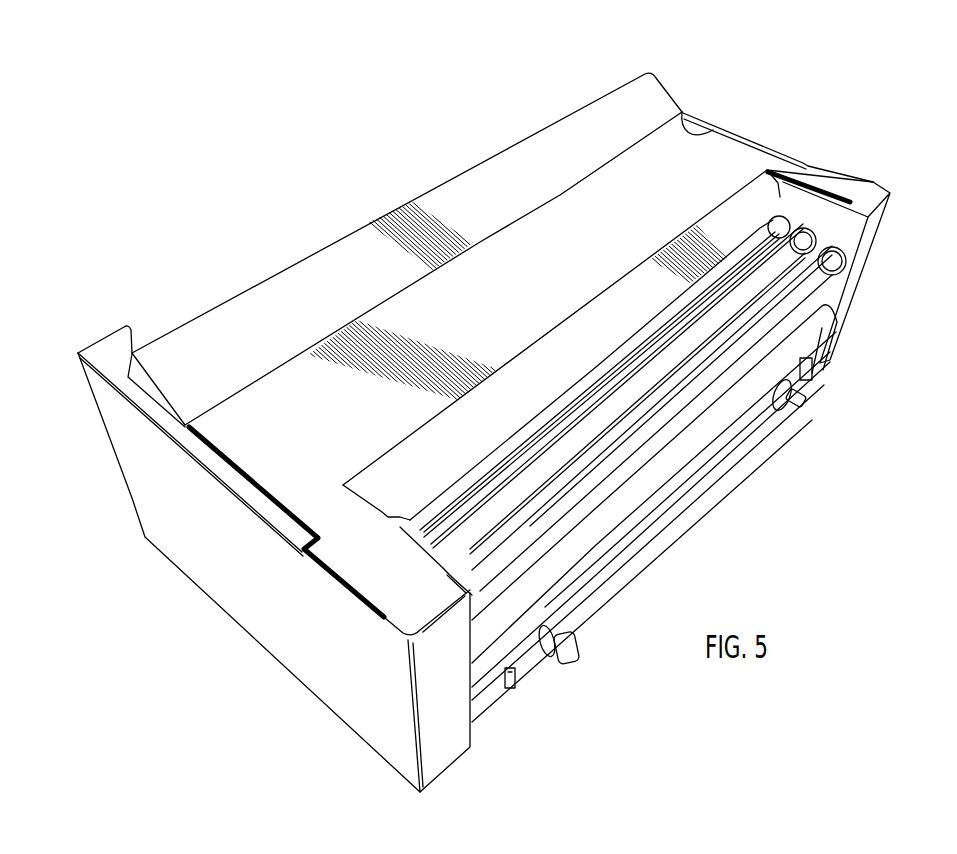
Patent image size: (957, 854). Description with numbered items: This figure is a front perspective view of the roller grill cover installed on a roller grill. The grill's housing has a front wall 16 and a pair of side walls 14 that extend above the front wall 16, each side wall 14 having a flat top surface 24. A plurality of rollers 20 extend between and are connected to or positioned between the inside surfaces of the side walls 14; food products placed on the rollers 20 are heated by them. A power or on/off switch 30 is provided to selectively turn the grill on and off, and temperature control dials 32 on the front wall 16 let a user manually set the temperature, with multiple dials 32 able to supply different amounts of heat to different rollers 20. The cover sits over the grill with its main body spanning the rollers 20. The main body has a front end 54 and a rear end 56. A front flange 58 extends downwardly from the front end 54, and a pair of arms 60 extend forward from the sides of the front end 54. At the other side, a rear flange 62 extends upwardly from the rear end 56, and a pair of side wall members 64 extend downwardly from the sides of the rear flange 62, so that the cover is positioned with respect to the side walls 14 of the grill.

The side walls 14 is at (238, 563).
The front wall 16 is at (712, 463).
The rollers 20 is at (823, 267).
The flat top surface 24 is at (120, 340).
The power or on/off switch 30 is at (507, 682).
The temperature control dials 32 is at (805, 407).
The front end 54 is at (742, 190).
The rear end 56 is at (714, 128).
The front flange 58 is at (752, 213).
The arms 60 is at (363, 565).
The rear flange 62 is at (652, 88).
The side wall members 64 is at (128, 377).